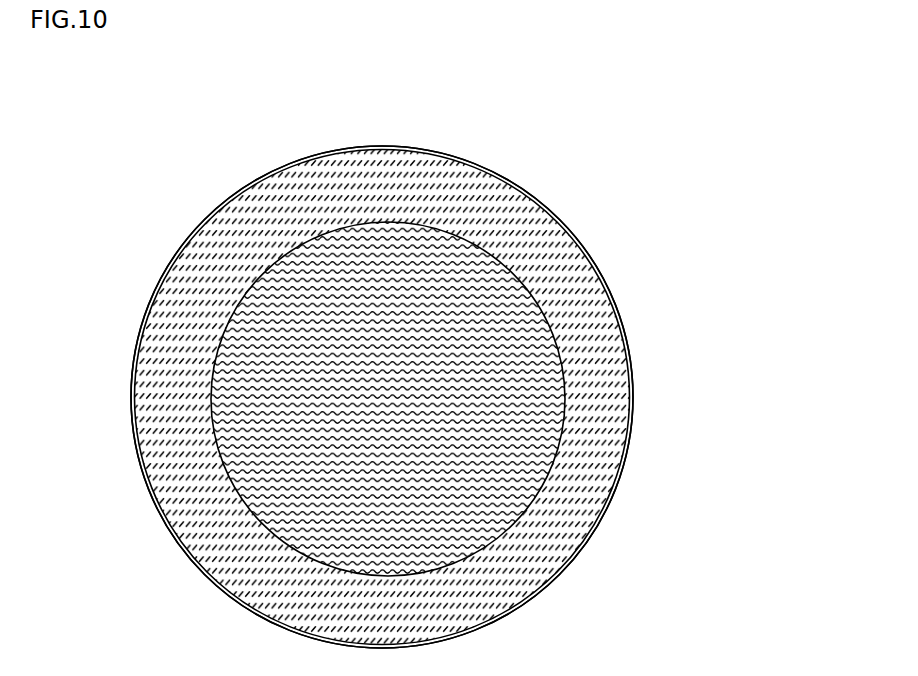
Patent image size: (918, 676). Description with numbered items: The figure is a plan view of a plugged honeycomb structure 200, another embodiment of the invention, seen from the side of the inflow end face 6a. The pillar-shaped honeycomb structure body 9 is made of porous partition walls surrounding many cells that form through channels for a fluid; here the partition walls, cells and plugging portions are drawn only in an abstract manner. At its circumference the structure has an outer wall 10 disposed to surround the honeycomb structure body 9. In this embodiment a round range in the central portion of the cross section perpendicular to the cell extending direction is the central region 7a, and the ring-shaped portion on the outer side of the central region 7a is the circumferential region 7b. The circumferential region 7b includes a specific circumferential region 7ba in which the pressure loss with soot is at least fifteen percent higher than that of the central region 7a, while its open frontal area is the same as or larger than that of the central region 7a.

The plugged honeycomb structure 200 is at (733, 65).
The inflow end face 6a is at (210, 207).
The honeycomb structure body 9 is at (548, 197).
The outer wall 10 is at (612, 483).
The central region 7a is at (468, 345).
The circumferential region 7b is at (452, 397).
The specific circumferential region 7ba is at (588, 385).